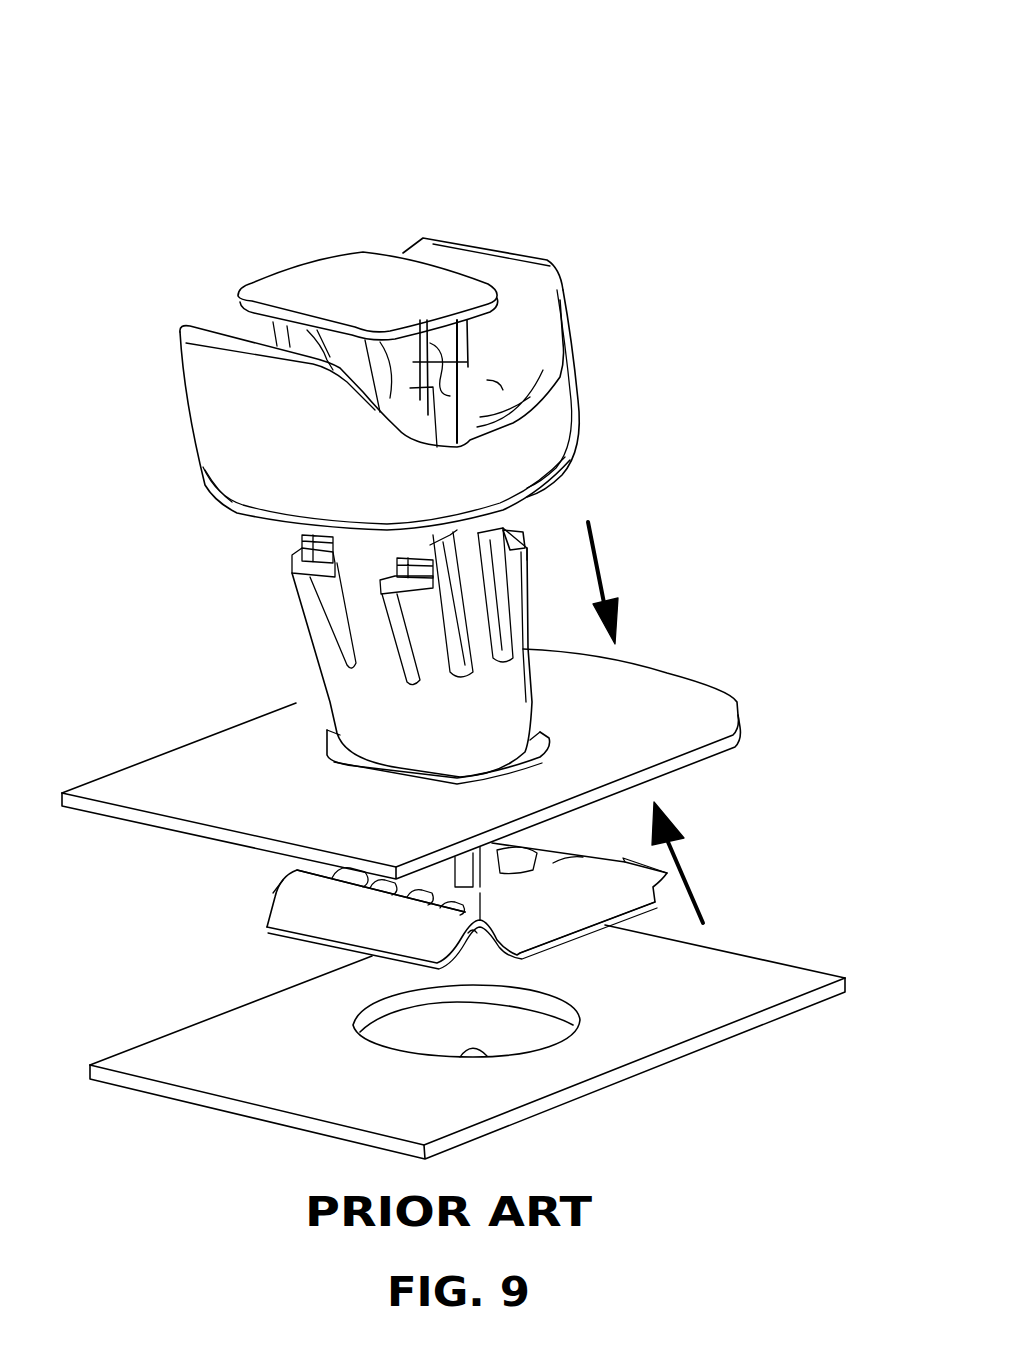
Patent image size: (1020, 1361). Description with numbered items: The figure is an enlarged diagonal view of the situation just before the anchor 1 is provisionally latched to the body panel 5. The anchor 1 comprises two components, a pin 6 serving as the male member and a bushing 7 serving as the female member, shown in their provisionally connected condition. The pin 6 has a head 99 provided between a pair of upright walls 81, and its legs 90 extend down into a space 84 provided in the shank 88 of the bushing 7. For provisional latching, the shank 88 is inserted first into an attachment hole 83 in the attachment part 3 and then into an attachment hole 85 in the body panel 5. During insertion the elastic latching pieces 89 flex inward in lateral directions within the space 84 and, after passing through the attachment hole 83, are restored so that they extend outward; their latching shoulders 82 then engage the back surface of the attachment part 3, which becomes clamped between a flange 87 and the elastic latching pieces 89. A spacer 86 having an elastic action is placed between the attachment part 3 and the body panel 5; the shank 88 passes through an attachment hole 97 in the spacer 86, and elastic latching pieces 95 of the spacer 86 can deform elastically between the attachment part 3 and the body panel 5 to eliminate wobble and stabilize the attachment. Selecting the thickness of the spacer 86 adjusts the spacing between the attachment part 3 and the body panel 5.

The anchor 1 is at (565, 63).
The attachment part 3 is at (147, 773).
The body panel 5 is at (153, 1058).
The pin 6 is at (372, 252).
The bushing 7 is at (562, 287).
The upright walls 81 is at (195, 375).
The latching shoulders 82 is at (293, 554).
The attachment hole 83 is at (540, 743).
The space 84 is at (453, 615).
The attachment hole 85 is at (486, 1054).
The spacer 86 is at (262, 917).
The flange 87 is at (222, 497).
The shank 88 is at (383, 708).
The elastic latching pieces 89 is at (310, 598).
The legs 90 is at (413, 362).
The elastic latching pieces 95 is at (330, 920).
The attachment hole 97 is at (480, 892).
The head 99 is at (307, 277).